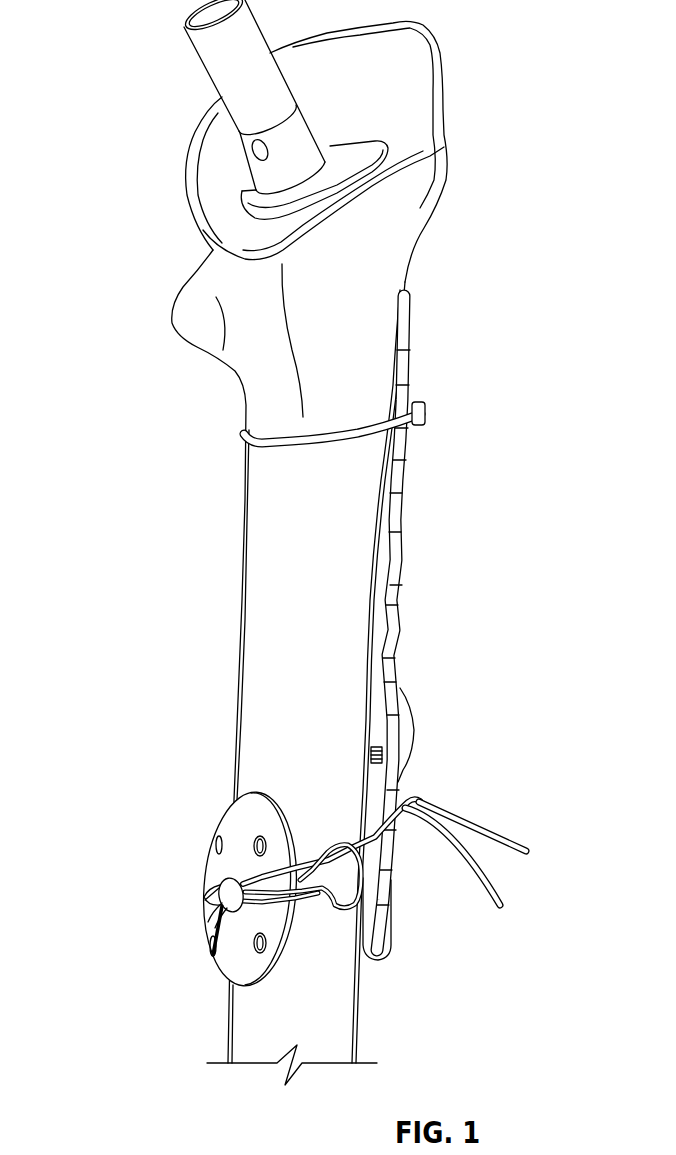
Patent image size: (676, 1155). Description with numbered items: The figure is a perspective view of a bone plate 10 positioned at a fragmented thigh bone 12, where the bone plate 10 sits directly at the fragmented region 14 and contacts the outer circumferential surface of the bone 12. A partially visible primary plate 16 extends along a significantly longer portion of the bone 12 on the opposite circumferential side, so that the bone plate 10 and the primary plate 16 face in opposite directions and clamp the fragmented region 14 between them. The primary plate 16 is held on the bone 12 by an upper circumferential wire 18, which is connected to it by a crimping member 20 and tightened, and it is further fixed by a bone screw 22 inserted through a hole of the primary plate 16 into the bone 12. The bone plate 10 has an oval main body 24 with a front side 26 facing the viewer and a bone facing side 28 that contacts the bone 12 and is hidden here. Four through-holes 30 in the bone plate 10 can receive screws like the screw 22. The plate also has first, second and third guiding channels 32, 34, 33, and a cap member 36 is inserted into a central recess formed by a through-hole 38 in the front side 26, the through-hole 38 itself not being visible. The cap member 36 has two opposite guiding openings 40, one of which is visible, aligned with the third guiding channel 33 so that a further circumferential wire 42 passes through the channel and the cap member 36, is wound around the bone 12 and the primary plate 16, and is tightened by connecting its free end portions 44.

The bone plate 10 is at (305, 915).
The fragmented thigh bone 12 is at (260, 605).
The fragmented region 14 is at (350, 892).
The primary plate 16 is at (406, 490).
The upper circumferential wire 18 is at (410, 428).
The crimping member 20 is at (415, 400).
The bone screw 22 is at (410, 738).
The oval main body 24 is at (212, 1001).
The front side 26 is at (237, 825).
The bone facing side 28 is at (293, 930).
The through-holes 30 is at (212, 847).
The first guiding channel 32 is at (210, 883).
The third guiding channel 33 is at (203, 901).
The second guiding channel 34 is at (208, 910).
The cap member 36 is at (218, 928).
The through-hole 38 is at (213, 920).
The guiding openings 40 is at (293, 957).
The further circumferential wire 42 is at (434, 777).
The free end portions 44 is at (462, 820).